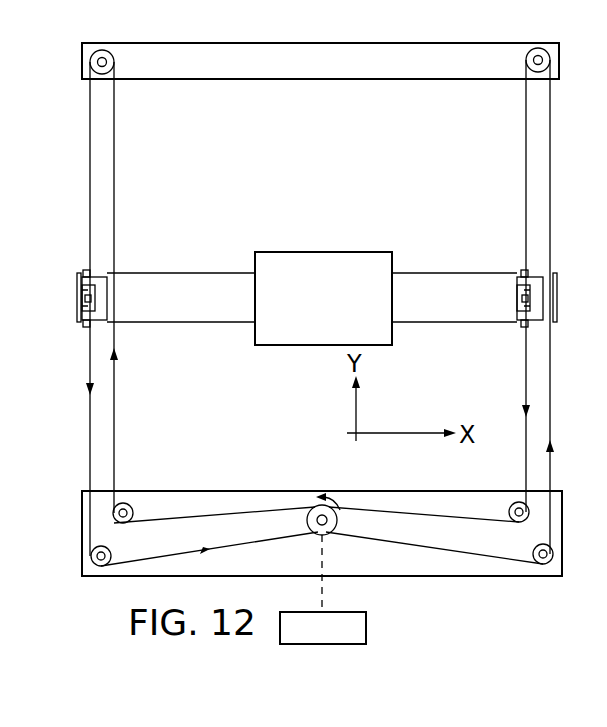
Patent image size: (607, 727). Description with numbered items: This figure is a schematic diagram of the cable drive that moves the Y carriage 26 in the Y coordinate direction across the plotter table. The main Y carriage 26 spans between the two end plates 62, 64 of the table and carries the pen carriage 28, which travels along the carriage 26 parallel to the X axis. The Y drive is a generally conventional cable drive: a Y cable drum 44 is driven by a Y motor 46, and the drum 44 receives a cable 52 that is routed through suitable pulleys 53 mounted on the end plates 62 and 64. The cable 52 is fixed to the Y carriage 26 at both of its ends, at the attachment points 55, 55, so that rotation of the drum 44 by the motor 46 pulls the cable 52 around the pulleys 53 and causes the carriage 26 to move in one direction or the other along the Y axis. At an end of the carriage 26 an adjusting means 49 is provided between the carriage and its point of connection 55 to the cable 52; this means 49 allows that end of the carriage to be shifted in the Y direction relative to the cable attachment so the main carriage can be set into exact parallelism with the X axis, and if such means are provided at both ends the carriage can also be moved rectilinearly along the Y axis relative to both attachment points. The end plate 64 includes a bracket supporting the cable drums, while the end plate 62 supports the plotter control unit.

The Y carriage 26 is at (197, 275).
The pen carriage 28 is at (338, 252).
The Y cable drum 44 is at (337, 522).
The Y motor 46 is at (345, 622).
The adjusting means 49 is at (112, 292).
The cable 52 is at (554, 413).
The pulleys 53 is at (112, 58).
The cable attachment point 55 is at (78, 298).
The end plate 62 is at (450, 43).
The end plate 64 is at (455, 577).